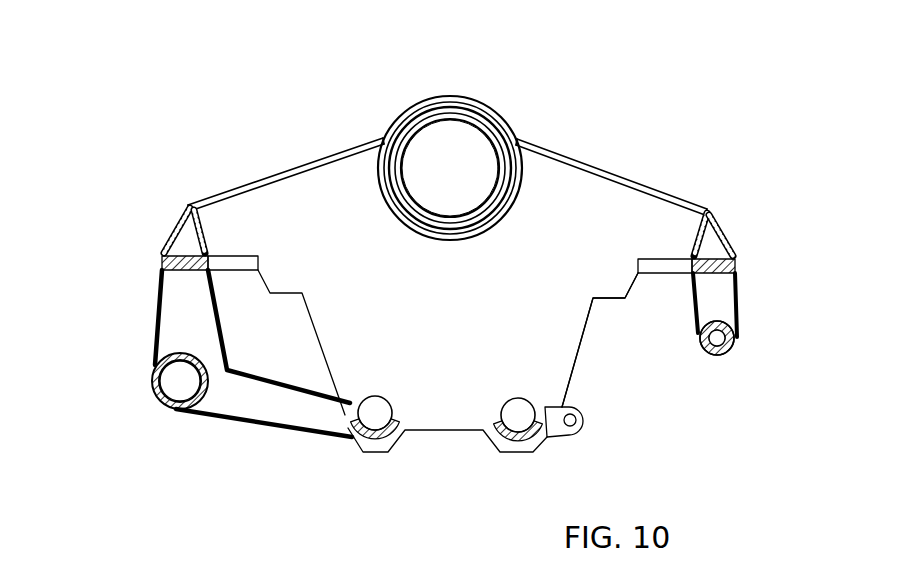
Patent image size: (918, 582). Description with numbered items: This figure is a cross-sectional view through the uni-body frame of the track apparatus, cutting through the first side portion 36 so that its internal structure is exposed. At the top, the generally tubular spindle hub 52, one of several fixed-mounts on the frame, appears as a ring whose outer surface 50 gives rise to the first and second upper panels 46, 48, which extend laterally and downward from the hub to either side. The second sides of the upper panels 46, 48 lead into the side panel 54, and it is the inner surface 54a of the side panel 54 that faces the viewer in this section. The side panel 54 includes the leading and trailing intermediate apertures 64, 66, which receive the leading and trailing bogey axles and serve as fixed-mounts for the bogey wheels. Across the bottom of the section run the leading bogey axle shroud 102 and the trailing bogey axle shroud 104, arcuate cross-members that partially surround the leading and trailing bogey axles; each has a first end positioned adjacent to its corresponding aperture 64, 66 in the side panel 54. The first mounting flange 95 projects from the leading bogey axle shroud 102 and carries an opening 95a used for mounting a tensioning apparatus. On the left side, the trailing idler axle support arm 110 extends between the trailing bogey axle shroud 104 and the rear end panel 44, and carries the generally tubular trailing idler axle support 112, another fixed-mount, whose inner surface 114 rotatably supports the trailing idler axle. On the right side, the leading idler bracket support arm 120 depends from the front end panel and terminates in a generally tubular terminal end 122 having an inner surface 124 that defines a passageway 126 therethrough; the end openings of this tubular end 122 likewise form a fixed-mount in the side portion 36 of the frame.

The first side portion 36 is at (620, 172).
The rear end panel 44 is at (177, 228).
The first upper panel 46 is at (318, 158).
The second upper panel 48 is at (567, 158).
The outer surface 50 is at (489, 106).
The spindle hub 52 is at (450, 106).
The side panel 54 is at (573, 328).
The inner surface 54a is at (489, 300).
The leading intermediate aperture 64 is at (517, 398).
The trailing intermediate aperture 66 is at (378, 398).
The first mounting flange 95 is at (569, 428).
The opening 95a is at (588, 417).
The leading bogey axle shroud 102 is at (495, 443).
The trailing bogey axle shroud 104 is at (360, 442).
The trailing idler axle support arm 110 is at (155, 310).
The trailing idler axle support 112 is at (152, 382).
The inner surface 114 is at (183, 388).
The leading idler bracket support arm 120 is at (740, 293).
The tubular terminal end 122 is at (720, 355).
The inner surface 124 is at (735, 337).
The passageway 126 is at (732, 345).